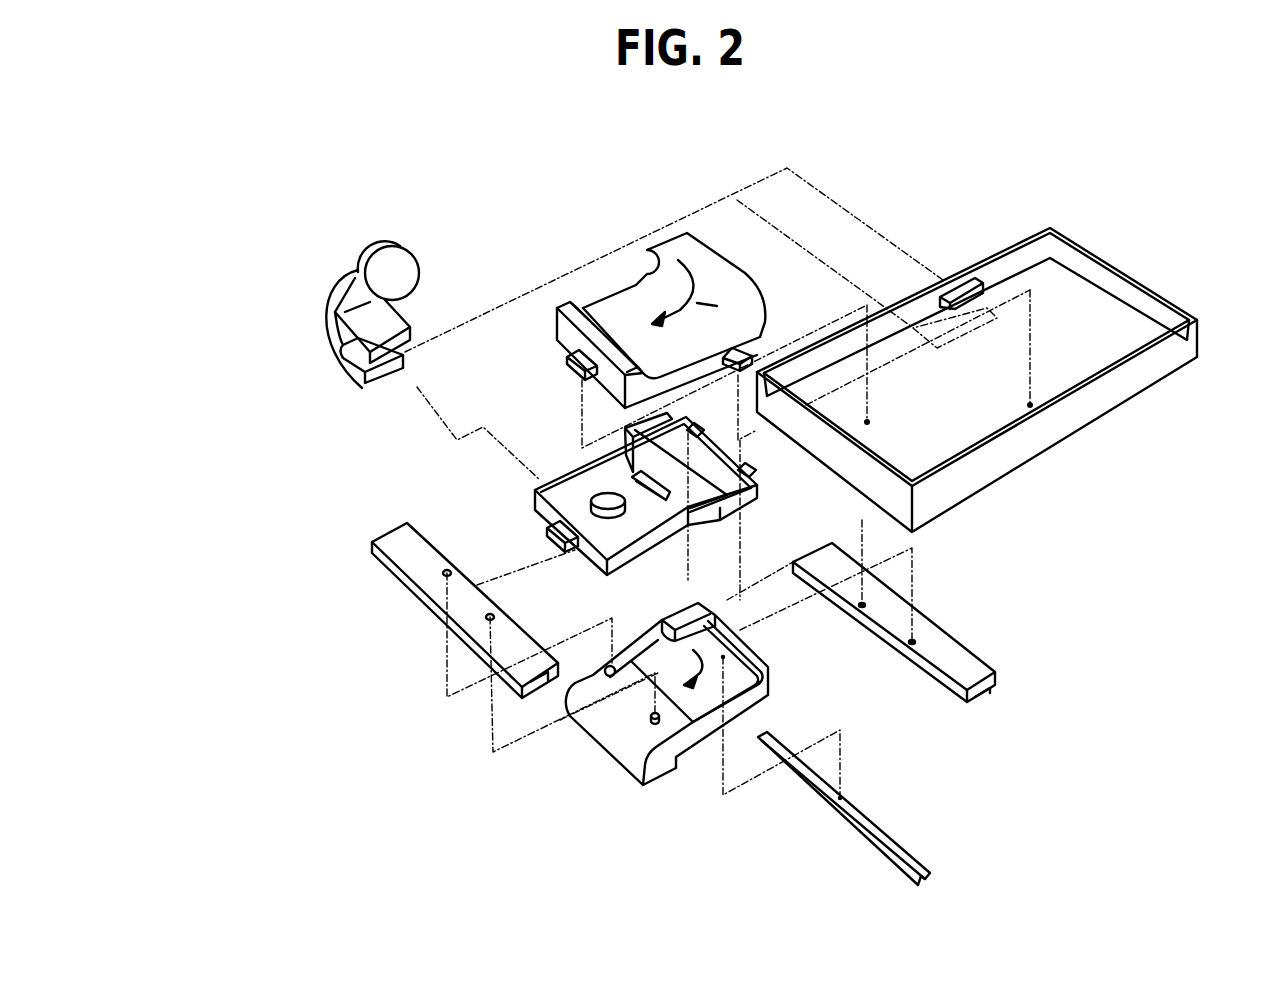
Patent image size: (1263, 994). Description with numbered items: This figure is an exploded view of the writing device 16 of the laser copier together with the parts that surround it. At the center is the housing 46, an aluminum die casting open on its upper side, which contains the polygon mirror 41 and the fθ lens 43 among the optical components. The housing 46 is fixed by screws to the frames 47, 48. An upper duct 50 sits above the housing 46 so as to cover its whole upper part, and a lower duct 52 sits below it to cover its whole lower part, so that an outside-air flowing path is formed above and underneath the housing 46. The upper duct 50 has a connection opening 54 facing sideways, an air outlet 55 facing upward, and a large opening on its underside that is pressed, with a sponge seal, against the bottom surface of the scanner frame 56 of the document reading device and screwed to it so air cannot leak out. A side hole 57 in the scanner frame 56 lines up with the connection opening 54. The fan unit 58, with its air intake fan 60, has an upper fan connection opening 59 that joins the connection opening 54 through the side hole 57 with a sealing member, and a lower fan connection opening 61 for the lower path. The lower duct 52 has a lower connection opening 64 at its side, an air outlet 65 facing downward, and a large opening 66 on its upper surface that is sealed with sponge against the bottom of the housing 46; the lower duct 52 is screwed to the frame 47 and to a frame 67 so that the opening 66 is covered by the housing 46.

The writing device 16 is at (633, 496).
The polygon mirror 41 is at (600, 492).
The fθ lens 43 is at (650, 500).
The housing 46 is at (758, 497).
The frame 47 is at (420, 570).
The frame 48 is at (953, 655).
The upper duct 50 is at (623, 297).
The lower duct 52 is at (678, 709).
The connection opening 54 is at (658, 243).
The air outlet 55 is at (578, 305).
The scanner frame 56 is at (977, 362).
The side hole 57 is at (972, 288).
The fan unit 58 is at (362, 340).
The upper fan connection opening 59 is at (357, 372).
The air intake fan 60 is at (405, 272).
The lower fan connection opening 61 is at (382, 387).
The lower connection opening 64 is at (678, 607).
The air outlet 65 is at (665, 775).
The large opening 66 is at (752, 640).
The frame 67 is at (893, 835).